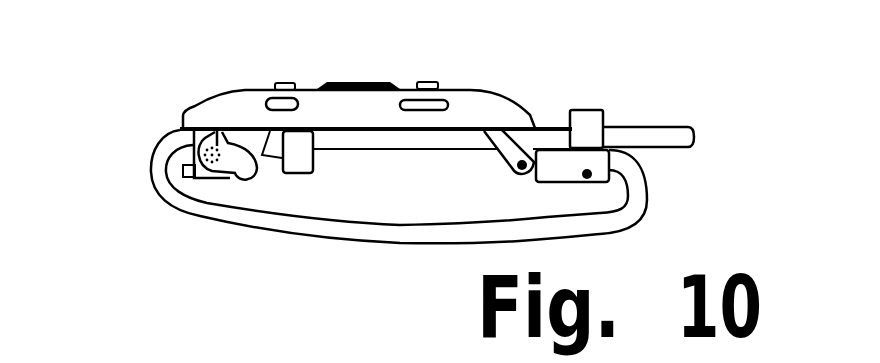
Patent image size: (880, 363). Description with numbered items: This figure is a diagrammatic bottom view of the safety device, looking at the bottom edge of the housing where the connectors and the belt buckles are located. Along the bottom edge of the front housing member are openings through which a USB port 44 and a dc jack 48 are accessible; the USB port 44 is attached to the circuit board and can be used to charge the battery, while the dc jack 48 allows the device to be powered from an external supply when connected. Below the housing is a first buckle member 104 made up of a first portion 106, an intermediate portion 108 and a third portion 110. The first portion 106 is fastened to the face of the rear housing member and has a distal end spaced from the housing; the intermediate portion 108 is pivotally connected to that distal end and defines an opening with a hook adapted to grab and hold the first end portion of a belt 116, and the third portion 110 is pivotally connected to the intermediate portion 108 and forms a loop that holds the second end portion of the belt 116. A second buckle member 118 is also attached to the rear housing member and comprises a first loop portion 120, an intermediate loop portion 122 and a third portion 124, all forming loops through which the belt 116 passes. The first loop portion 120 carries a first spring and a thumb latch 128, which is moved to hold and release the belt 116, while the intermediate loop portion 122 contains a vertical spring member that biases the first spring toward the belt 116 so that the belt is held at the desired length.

The USB port 44 is at (268, 101).
The dc jack 48 is at (437, 83).
The first buckle member 104 is at (618, 115).
The first portion 106 is at (508, 150).
The intermediate portion 108 is at (575, 183).
The third portion 110 is at (586, 125).
The belt 116 is at (379, 233).
The second buckle member 118 is at (155, 120).
The first loop portion 120 is at (195, 148).
The intermediate loop portion 122 is at (203, 177).
The third portion 124 is at (304, 166).
The thumb latch 128 is at (245, 175).